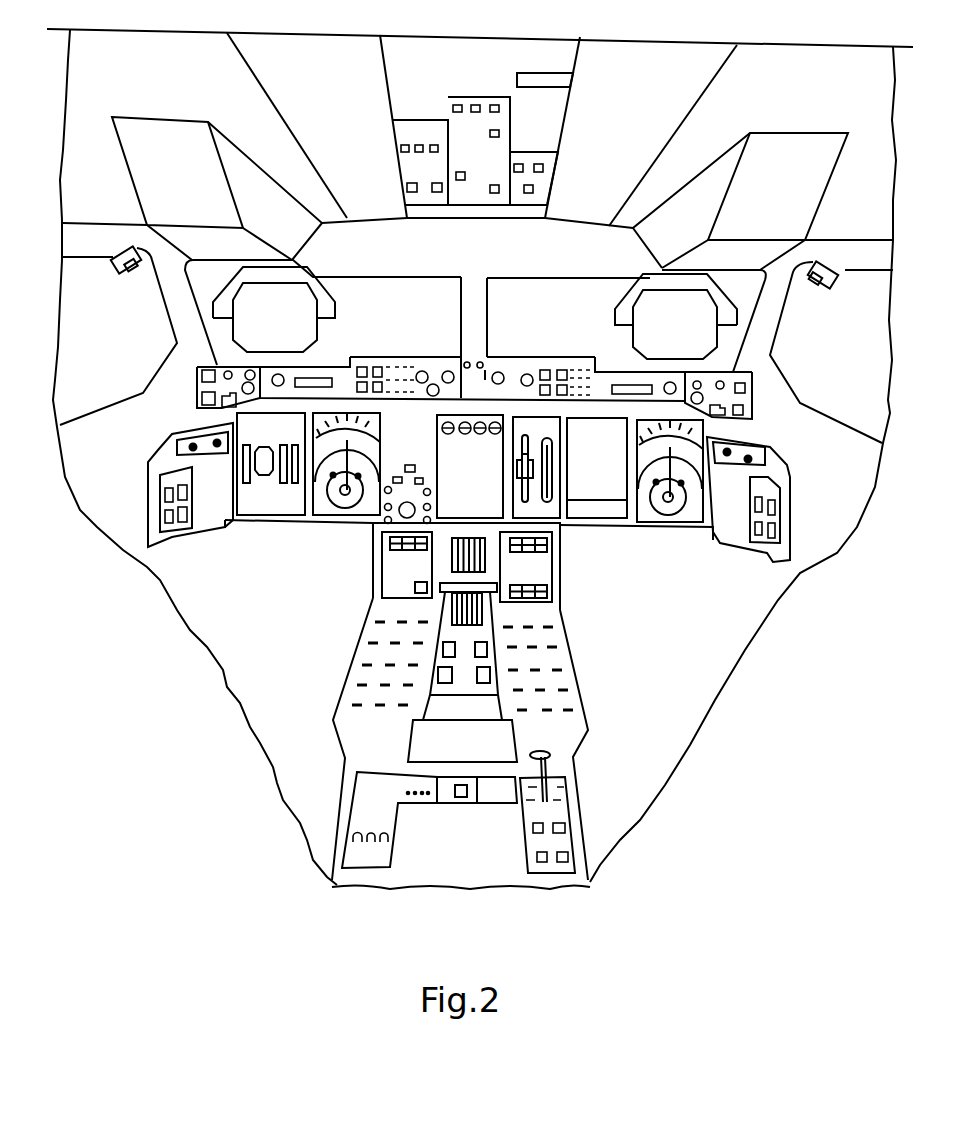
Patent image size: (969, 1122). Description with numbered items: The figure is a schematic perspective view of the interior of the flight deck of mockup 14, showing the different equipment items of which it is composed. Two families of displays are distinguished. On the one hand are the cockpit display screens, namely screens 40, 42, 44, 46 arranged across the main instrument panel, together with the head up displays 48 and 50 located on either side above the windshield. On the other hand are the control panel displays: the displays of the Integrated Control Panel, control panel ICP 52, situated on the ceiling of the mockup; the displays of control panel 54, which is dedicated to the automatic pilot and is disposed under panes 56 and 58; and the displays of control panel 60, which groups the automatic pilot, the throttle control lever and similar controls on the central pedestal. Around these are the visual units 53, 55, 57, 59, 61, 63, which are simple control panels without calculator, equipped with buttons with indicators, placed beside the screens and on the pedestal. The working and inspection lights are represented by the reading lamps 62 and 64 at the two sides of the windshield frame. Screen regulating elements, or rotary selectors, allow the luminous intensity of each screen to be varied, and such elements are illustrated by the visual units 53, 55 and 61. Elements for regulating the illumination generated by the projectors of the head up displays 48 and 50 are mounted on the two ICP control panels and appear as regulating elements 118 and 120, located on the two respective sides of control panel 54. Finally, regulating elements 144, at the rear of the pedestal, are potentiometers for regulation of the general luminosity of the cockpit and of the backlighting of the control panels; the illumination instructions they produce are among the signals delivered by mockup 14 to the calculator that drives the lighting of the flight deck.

The mockup 14 is at (175, 693).
The cockpit display screen 40 is at (270, 505).
The cockpit display screen 42 is at (318, 508).
The cockpit display screen 44 is at (600, 513).
The cockpit display screen 46 is at (652, 517).
The head up display 48 is at (178, 202).
The head up display 50 is at (727, 260).
The control panel ICP 52 is at (420, 95).
The visual unit 53 is at (200, 440).
The control panel 54 is at (508, 368).
The visual unit 55 is at (740, 450).
The pane 56 is at (412, 288).
The visual unit 57 is at (168, 480).
The pane 58 is at (518, 287).
The visual unit 59 is at (765, 488).
The control panel 60 is at (447, 637).
The visual unit 61 is at (447, 573).
The reading lamp 62 is at (118, 268).
The visual unit 63 is at (447, 465).
The reading lamp 64 is at (838, 290).
The regulating element 118 is at (190, 377).
The regulating element 120 is at (750, 383).
The regulating elements 144 is at (558, 815).